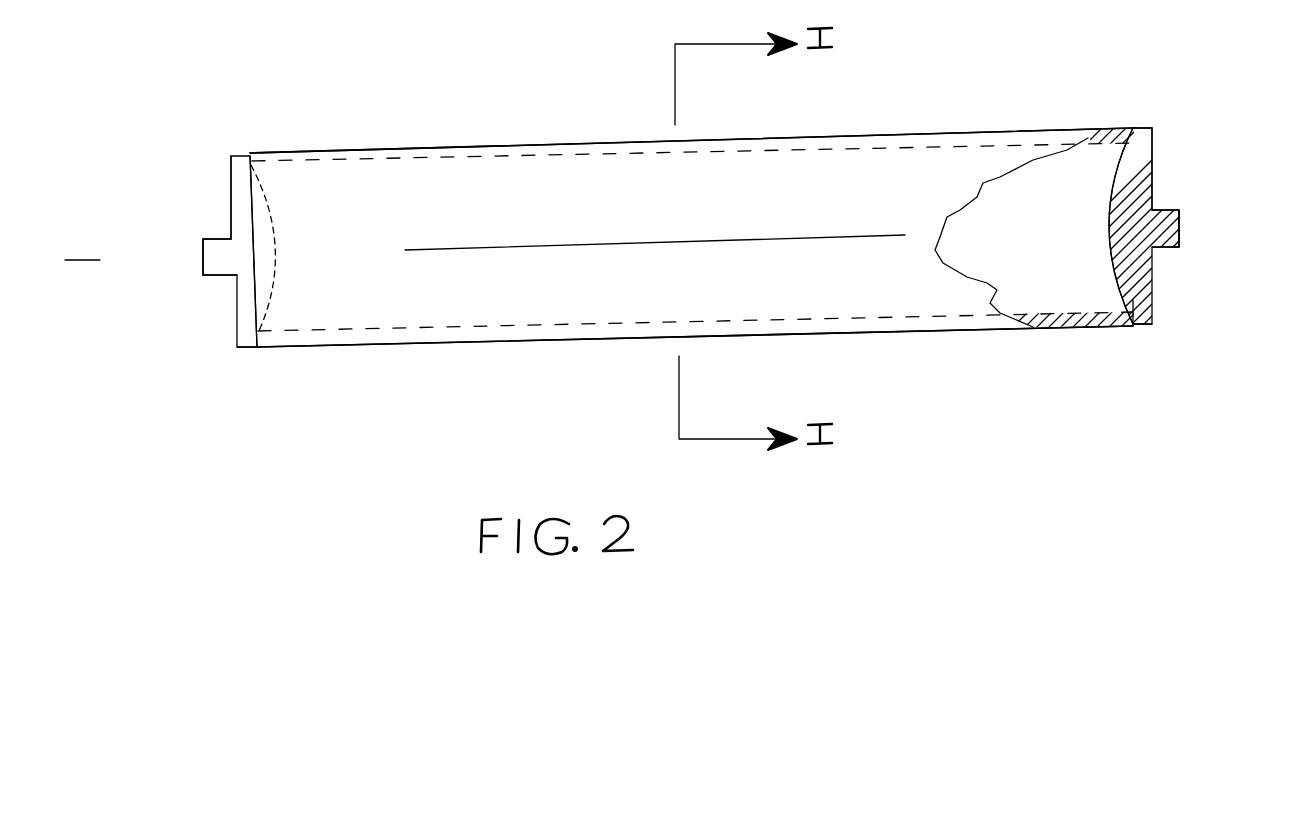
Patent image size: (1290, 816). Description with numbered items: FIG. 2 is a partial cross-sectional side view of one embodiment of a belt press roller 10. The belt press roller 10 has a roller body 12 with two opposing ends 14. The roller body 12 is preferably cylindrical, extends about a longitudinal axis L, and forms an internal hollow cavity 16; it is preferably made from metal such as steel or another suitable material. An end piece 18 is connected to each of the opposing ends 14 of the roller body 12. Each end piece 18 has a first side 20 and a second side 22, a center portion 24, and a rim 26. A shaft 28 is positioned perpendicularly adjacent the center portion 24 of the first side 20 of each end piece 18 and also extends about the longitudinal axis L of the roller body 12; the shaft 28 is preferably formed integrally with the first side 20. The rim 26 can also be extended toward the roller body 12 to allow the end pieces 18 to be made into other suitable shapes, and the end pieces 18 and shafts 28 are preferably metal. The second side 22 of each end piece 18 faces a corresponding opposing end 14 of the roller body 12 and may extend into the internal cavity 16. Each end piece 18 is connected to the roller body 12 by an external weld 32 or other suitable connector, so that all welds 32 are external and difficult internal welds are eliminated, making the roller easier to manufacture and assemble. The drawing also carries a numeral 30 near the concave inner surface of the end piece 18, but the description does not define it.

The belt press roller 10 is at (866, 362).
The roller body 12 is at (387, 307).
The opposing ends 14 is at (272, 152).
The internal hollow cavity 16 is at (1022, 248).
The end piece 18 is at (237, 313).
The first side 20 is at (232, 175).
The second side 22 is at (252, 168).
The center portion 24 is at (242, 253).
The rim 26 is at (242, 348).
The shaft 28 is at (202, 253).
The concave inner surface of end cap 30 is at (265, 263).
The external weld 32 is at (257, 245).
The longitudinal axis L is at (694, 241).